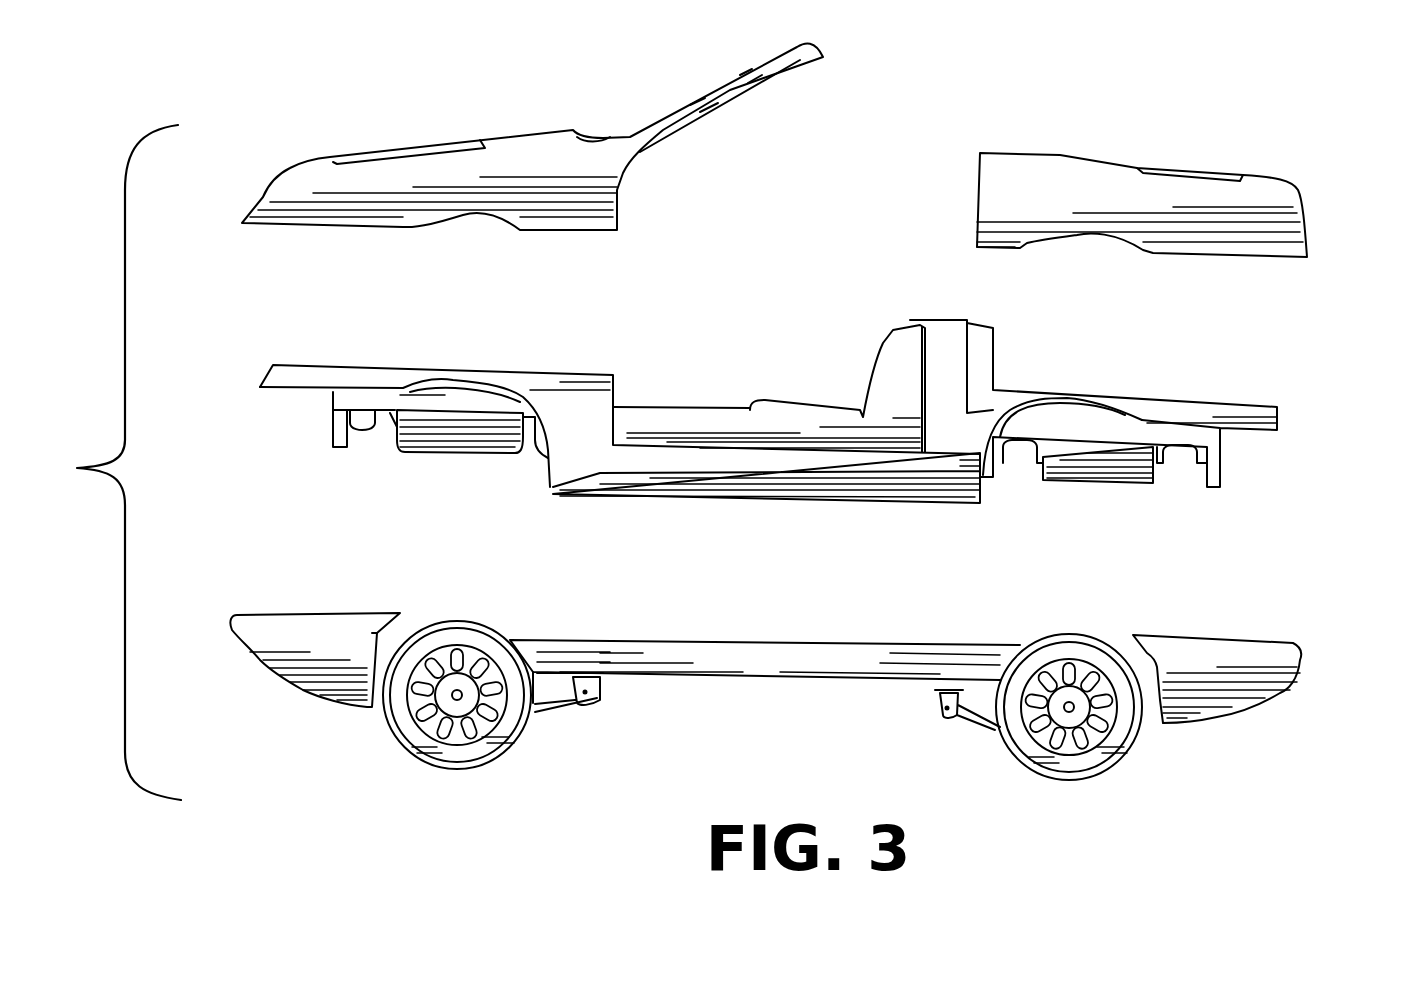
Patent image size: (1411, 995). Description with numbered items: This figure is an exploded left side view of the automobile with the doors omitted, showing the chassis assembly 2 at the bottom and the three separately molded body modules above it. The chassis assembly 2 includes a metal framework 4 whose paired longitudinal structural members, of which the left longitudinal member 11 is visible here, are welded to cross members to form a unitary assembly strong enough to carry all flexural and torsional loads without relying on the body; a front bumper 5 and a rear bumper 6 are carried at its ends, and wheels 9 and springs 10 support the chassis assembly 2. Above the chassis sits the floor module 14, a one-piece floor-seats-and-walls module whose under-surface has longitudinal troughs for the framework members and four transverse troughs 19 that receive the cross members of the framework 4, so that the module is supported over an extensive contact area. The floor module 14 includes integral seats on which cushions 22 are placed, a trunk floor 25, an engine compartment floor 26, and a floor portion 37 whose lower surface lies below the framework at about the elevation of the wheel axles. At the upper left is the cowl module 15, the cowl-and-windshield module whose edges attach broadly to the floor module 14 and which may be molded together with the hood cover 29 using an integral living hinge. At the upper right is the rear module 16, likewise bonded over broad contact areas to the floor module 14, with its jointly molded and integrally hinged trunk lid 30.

The chassis assembly 2 is at (763, 710).
The metal framework 4 is at (765, 694).
The front bumper 5 is at (252, 652).
The rear bumper 6 is at (1300, 663).
The wheels 9 is at (397, 740).
The springs 10 is at (547, 717).
The left longitudinal structural member 11 is at (768, 662).
The floor module 14 is at (711, 438).
The cowl module 15 is at (482, 136).
The rear module 16 is at (1193, 172).
The transverse troughs 19 is at (368, 428).
The cushions 22 is at (803, 400).
The trunk floor 25 is at (1100, 483).
The engine compartment floor 26 is at (430, 453).
The hood cover 29 is at (427, 148).
The trunk lid 30 is at (1193, 168).
The floor portion 37 is at (667, 497).